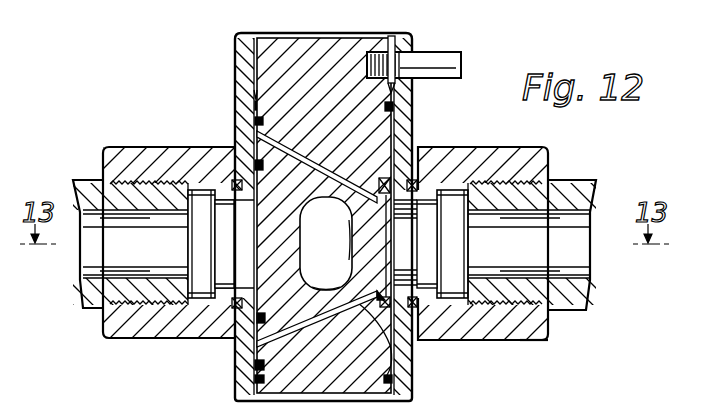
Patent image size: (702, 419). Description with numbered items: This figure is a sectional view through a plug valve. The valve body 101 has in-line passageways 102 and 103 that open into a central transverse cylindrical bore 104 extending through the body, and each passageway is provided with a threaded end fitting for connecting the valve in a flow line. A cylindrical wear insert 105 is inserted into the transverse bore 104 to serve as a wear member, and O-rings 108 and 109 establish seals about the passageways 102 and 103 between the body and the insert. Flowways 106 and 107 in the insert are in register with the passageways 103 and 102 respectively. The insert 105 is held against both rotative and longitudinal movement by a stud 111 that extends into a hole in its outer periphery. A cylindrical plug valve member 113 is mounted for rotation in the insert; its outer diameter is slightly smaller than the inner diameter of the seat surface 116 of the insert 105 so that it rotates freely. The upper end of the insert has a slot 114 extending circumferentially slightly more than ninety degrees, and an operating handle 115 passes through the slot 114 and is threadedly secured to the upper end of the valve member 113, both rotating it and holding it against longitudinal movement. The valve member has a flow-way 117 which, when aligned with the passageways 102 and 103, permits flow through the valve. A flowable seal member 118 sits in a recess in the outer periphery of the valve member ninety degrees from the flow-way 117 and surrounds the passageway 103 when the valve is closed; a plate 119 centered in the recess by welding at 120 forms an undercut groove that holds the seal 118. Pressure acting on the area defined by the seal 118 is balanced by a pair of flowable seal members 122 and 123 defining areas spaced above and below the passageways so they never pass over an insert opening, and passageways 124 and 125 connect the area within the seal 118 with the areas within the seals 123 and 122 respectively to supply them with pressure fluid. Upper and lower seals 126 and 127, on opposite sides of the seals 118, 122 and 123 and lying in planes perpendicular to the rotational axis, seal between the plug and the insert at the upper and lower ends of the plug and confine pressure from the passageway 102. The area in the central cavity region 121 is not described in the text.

The valve body 101 is at (547, 163).
The passageway 102 is at (222, 232).
The passageway 103 is at (438, 165).
The transverse cylindrical bore 104 is at (256, 320).
The wear insert 105 is at (236, 54).
The flowway 106 is at (418, 268).
The flowway 107 is at (232, 275).
The O-ring 108 is at (227, 302).
The O-ring 109 is at (405, 290).
The stud 111 is at (546, 418).
The plug valve member 113 is at (391, 109).
The slot 114 is at (408, 82).
The operating handle 115 is at (455, 52).
The seat surface 116 is at (406, 368).
The flow-way 117 is at (319, 290).
The flowable seal member 118 is at (405, 141).
The plate 119 is at (412, 192).
The welding 120 is at (398, 288).
The chamber wall 121 is at (350, 224).
The flowable seal member 122 is at (256, 134).
The flowable seal member 123 is at (256, 372).
The passageway 124 is at (414, 348).
The passageway 125 is at (314, 200).
The upper seal 126 is at (235, 96).
The lower seal 127 is at (357, 418).